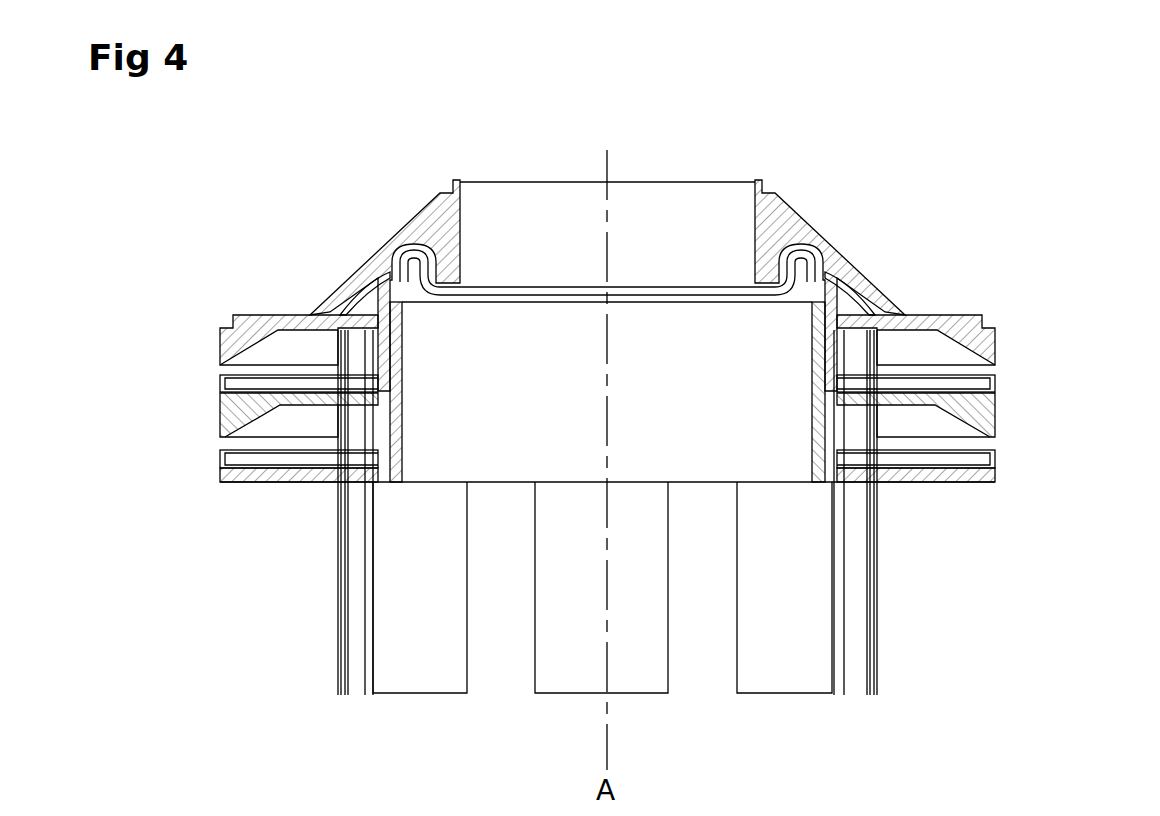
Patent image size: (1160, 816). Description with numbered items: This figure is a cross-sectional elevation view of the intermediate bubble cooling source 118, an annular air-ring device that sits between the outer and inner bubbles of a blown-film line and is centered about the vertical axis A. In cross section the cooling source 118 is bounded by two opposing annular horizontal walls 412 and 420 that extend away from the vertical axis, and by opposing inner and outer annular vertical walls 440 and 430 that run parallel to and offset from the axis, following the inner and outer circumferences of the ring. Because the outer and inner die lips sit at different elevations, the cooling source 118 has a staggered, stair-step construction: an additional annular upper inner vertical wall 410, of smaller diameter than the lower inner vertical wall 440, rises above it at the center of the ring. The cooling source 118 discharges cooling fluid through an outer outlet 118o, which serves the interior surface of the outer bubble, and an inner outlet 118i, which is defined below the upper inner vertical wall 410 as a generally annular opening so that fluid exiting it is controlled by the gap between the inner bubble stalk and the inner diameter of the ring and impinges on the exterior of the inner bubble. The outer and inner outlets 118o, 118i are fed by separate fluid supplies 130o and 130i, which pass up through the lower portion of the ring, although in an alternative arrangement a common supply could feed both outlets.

The upper inner vertical wall 410 is at (465, 200).
The intermediate bubble cooling source 118 is at (829, 114).
The inner outlet 118i is at (462, 286).
The outer outlet 118o is at (220, 366).
The horizontal wall 412 is at (272, 313).
The outer vertical wall 430 is at (218, 416).
The horizontal wall 420 is at (268, 486).
The fluid supply 130o is at (318, 407).
The fluid supply 130i is at (366, 492).
The lower inner vertical wall 440 is at (405, 395).